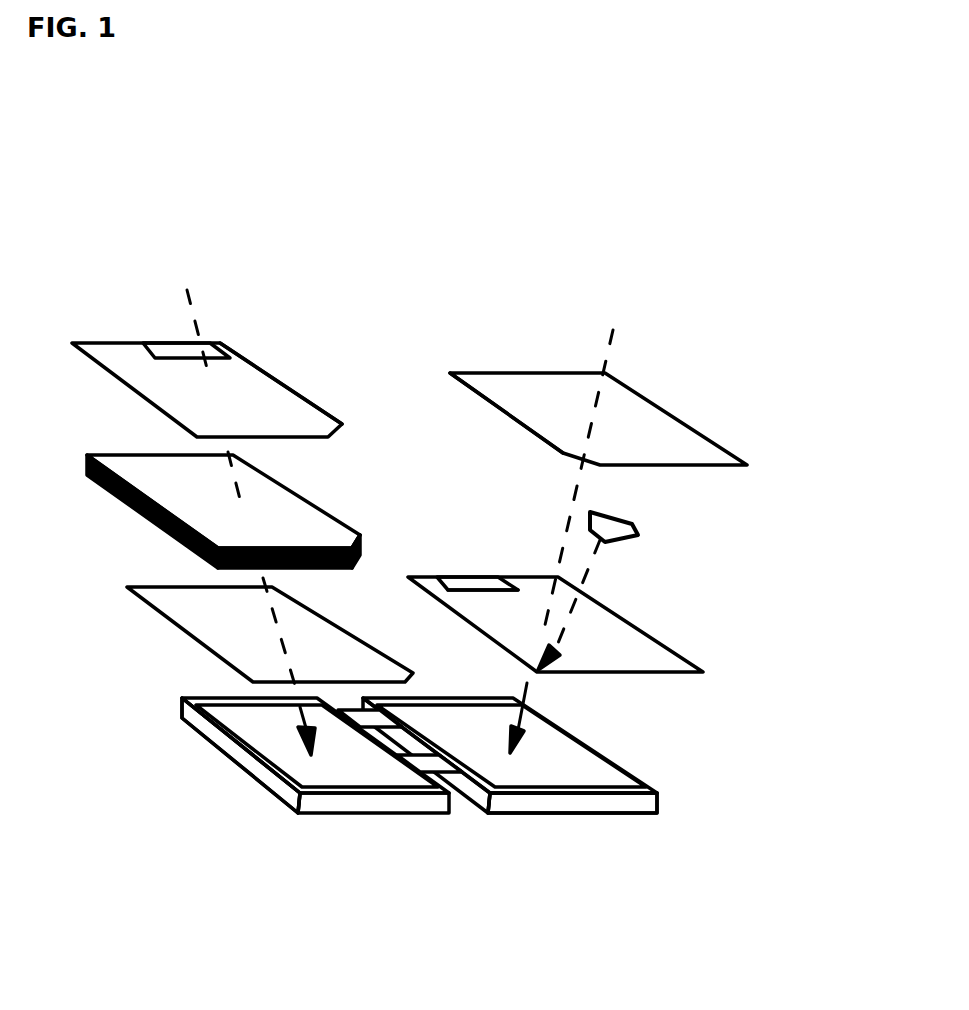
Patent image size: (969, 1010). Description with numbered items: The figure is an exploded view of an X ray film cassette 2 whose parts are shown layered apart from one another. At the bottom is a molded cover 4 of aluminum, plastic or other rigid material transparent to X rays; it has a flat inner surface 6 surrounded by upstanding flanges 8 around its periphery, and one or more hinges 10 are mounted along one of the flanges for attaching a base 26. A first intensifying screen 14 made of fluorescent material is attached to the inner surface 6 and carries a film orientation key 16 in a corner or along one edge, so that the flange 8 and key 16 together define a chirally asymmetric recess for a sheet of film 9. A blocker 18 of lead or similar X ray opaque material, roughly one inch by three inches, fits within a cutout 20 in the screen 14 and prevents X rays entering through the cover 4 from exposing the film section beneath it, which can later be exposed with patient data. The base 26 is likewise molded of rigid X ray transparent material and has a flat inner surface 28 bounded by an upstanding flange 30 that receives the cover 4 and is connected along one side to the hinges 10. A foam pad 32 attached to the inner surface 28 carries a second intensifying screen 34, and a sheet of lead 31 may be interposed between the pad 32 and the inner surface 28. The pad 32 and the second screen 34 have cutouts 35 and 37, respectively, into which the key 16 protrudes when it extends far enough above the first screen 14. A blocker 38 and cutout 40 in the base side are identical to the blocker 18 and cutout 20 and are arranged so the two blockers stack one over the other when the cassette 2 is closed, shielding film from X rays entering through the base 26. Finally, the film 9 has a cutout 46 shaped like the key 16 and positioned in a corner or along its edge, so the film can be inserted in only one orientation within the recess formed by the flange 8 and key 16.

The X ray film cassette 2 is at (404, 610).
The cover 4 is at (554, 788).
The inner surface 6 is at (543, 780).
The flanges 8 is at (660, 798).
The sheet of film 9 is at (642, 445).
The hinges 10 is at (432, 767).
The first intensifying screen 14 is at (630, 662).
The film orientation key 16 is at (638, 535).
The blocker 18 is at (472, 587).
The cutout 20 is at (437, 577).
The base 26 is at (275, 795).
The inner surface 28 is at (362, 780).
The flange 30 is at (225, 742).
The sheet of lead 31 is at (327, 670).
The foam pad 32 is at (293, 537).
The second intensifying screen 34 is at (268, 422).
The cutout 35 is at (363, 556).
The cutout 37 is at (343, 428).
The blocker 38 is at (180, 350).
The cutout 40 is at (148, 348).
The cutout 46 is at (577, 465).